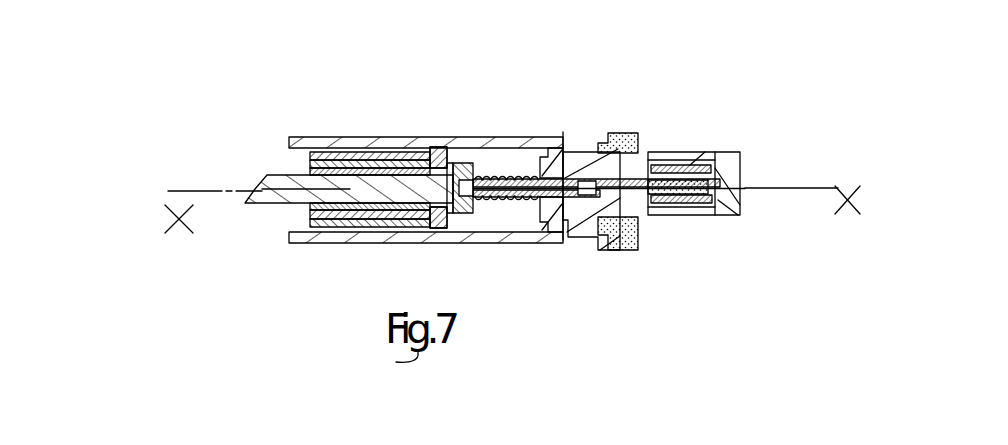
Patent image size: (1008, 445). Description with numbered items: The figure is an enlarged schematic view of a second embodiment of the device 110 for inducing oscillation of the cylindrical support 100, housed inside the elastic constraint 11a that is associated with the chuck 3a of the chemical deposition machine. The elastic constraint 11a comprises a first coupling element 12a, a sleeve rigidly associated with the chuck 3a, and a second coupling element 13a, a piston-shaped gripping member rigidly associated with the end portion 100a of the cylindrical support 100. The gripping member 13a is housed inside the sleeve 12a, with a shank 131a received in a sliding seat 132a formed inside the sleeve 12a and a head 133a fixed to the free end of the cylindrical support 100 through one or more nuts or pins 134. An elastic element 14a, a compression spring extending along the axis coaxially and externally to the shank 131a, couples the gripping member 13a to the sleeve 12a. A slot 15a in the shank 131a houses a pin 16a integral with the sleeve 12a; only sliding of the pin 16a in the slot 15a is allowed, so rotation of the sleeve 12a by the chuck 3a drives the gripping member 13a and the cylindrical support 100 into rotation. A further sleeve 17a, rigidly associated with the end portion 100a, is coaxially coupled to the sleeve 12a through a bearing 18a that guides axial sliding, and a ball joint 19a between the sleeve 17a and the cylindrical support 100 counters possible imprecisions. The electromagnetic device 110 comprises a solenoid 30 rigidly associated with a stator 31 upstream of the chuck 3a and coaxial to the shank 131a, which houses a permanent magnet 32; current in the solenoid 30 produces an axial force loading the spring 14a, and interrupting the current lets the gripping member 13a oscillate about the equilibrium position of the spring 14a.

The elastic constraint 11a is at (310, 108).
The first coupling element 12a is at (360, 136).
The nuts or pins 134 is at (448, 147).
The second coupling element 13a is at (479, 161).
The pin 16a is at (566, 186).
The slot 15a is at (578, 180).
The chuck 3a is at (640, 130).
The solenoid 30 is at (713, 152).
The stator 31 is at (732, 166).
The further sleeve 17a is at (307, 154).
The cylindrical support 100 is at (255, 195).
The bearing 18a is at (310, 233).
The ball joint 19a is at (352, 233).
The end portion 100a is at (418, 233).
The head 133a is at (470, 213).
The elastic element 14a is at (515, 237).
The shank 131a is at (625, 243).
The permanent magnet 32 is at (673, 216).
The device for inducing oscillation 110 is at (660, 218).
The sliding seat 132a is at (712, 216).